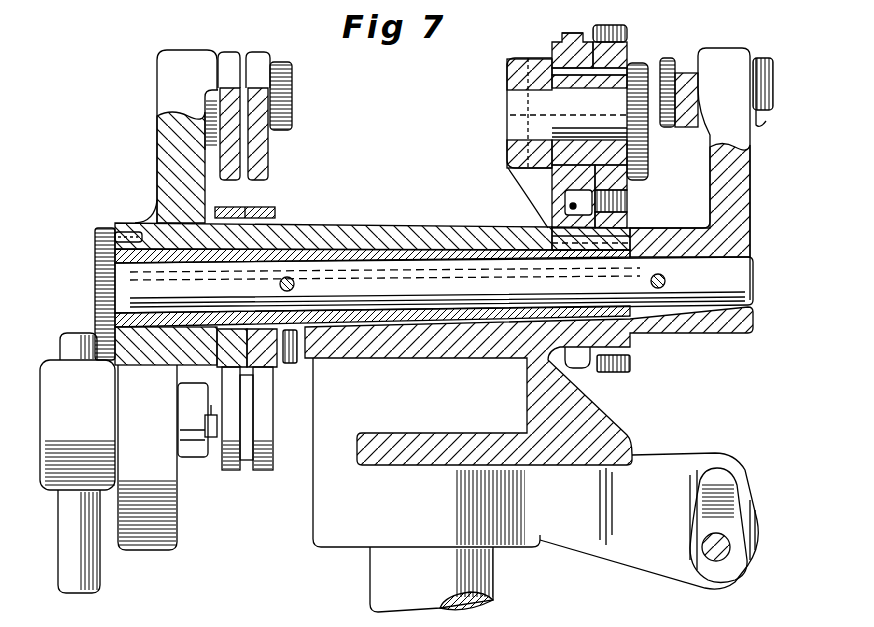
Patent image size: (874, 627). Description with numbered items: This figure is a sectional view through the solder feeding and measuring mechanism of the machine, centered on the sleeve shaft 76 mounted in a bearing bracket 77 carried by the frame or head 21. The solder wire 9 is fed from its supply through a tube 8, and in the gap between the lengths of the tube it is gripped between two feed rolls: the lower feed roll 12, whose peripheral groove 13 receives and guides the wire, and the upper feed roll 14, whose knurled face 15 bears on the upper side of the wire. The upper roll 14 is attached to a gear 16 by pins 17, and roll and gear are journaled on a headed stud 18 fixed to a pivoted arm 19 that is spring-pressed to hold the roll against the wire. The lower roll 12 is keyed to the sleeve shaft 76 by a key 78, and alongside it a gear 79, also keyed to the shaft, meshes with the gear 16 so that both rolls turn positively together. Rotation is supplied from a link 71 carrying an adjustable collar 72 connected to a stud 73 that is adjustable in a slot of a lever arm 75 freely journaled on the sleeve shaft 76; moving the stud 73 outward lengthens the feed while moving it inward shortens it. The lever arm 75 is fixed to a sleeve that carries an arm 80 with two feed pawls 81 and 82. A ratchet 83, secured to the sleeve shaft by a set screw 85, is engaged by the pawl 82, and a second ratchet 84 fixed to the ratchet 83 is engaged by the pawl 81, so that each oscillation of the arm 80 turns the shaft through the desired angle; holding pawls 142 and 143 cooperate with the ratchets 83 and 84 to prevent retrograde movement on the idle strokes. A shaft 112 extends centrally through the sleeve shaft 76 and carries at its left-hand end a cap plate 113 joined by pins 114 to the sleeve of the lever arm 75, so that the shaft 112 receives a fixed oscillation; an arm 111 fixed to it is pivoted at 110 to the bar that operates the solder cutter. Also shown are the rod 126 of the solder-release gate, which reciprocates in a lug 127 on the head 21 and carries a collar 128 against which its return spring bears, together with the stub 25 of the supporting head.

The tube 8 is at (568, 198).
The solder wire 9 is at (572, 208).
The lower feed roll 12 is at (605, 225).
The peripheral groove 13 is at (577, 370).
The upper feed roll 14 is at (560, 50).
The knurled face 15 is at (572, 33).
The gear 16 is at (620, 36).
The pins 17 is at (605, 70).
The headed stud 18 is at (570, 98).
The arm 19 is at (507, 68).
The frame 21 is at (590, 432).
The housing stub 25 is at (387, 566).
The link 71 is at (83, 565).
The adjustable collar 72 is at (60, 383).
The stud 73 is at (194, 420).
The lever arm 75 is at (148, 487).
The sleeve shaft 76 is at (293, 247).
The bearing bracket 77 is at (400, 226).
The key 78 is at (577, 244).
The gear 79 is at (632, 351).
The arm 80 is at (157, 126).
The pawl 81 is at (229, 60).
The pawl 82 is at (258, 60).
The ratchet 83 is at (278, 207).
The second ratchet 84 is at (178, 220).
The set screw 85 is at (290, 363).
The pivot 110 is at (763, 72).
The arm 111 is at (737, 184).
The shaft 112 is at (745, 270).
The cap plate 113 is at (104, 270).
The pins 114 is at (115, 237).
The rod 126 is at (707, 556).
The lug 127 is at (742, 492).
The collar 128 is at (730, 519).
The holding pawl 142 is at (263, 470).
The holding pawl 143 is at (232, 470).